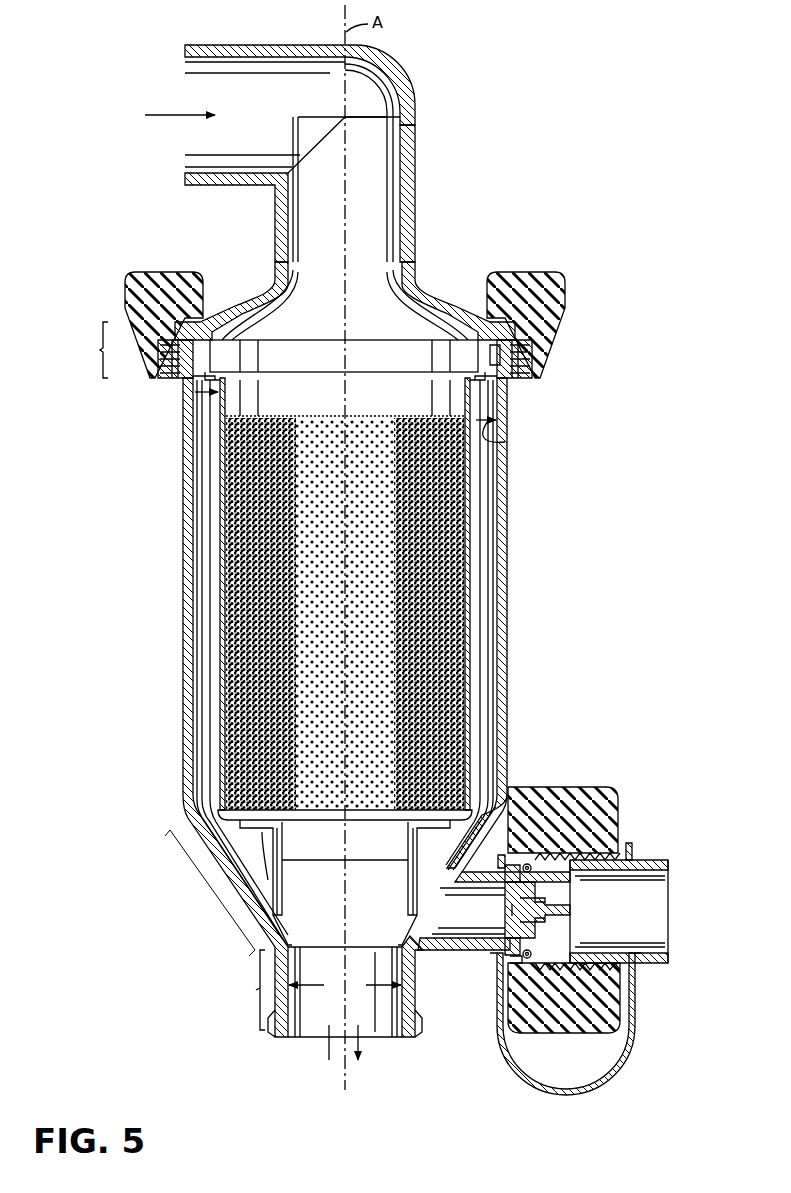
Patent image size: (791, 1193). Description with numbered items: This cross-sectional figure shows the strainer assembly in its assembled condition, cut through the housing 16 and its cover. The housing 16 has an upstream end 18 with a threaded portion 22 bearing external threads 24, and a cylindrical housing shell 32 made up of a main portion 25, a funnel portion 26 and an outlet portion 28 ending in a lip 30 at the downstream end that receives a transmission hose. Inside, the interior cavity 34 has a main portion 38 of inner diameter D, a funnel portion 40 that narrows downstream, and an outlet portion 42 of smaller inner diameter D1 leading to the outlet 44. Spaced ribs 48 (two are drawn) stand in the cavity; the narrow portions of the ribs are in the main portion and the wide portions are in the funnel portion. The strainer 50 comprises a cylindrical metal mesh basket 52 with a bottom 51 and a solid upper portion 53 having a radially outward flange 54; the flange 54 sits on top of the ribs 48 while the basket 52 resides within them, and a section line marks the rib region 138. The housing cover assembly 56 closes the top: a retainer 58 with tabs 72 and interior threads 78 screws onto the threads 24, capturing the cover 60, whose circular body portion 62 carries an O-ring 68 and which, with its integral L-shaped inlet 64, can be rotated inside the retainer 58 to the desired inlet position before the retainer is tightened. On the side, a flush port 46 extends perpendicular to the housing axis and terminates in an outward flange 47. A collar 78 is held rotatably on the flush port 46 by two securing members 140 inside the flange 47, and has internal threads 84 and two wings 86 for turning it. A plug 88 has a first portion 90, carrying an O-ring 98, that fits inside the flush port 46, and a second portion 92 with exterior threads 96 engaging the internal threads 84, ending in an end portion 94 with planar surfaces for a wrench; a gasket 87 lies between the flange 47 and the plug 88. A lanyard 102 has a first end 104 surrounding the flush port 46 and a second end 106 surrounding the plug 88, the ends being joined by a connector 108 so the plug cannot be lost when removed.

The inlet 64 is at (285, 46).
The cover 60 is at (414, 186).
The housing cover assembly 56 is at (447, 262).
The circular body portion 62 is at (264, 294).
The tabs 72 is at (130, 292).
The retainer 58 is at (566, 300).
The external threads 24 is at (165, 362).
The threaded portion 22 is at (90, 350).
The threads / collar 78 is at (540, 356).
The upstream end 18 is at (548, 380).
The O-ring 68 is at (512, 385).
The main portion 38 is at (482, 590).
The main portion 25 is at (185, 550).
The funnel portion 40 is at (192, 840).
The housing 16 is at (508, 472).
The housing shell 32 is at (500, 506).
The flange 54 is at (196, 396).
The inner diameter D is at (506, 442).
The strainer 50 is at (219, 488).
The metal mesh basket 52 is at (222, 526).
The upper portion 53 is at (326, 414).
The ribs 48 is at (285, 882).
The bottom 51 is at (305, 822).
The interior cavity 34 is at (345, 845).
The support rib 138 is at (262, 836).
The funnel portion 26 is at (210, 893).
The outlet portion 28 is at (246, 990).
The inner diameter D1 is at (345, 986).
The lip 30 is at (412, 1038).
The outlet portion 42 is at (376, 1000).
The outlet 44 is at (300, 1040).
The flush port 46 is at (472, 952).
The internal threads 84 is at (548, 874).
The gasket 87 is at (568, 868).
The first end 104 is at (506, 866).
The securing members 140 is at (530, 862).
The plug 88 is at (672, 912).
The second portion 92 is at (612, 838).
The second end 106 is at (634, 852).
The end portion 94 is at (670, 866).
The exterior threads 96 is at (592, 1000).
The first portion 90 is at (546, 1034).
The wings 86 is at (596, 792).
The O-ring 98 is at (512, 982).
The lanyard 102 is at (610, 1080).
The connector 108 is at (565, 1096).
The flange 47 is at (520, 1036).